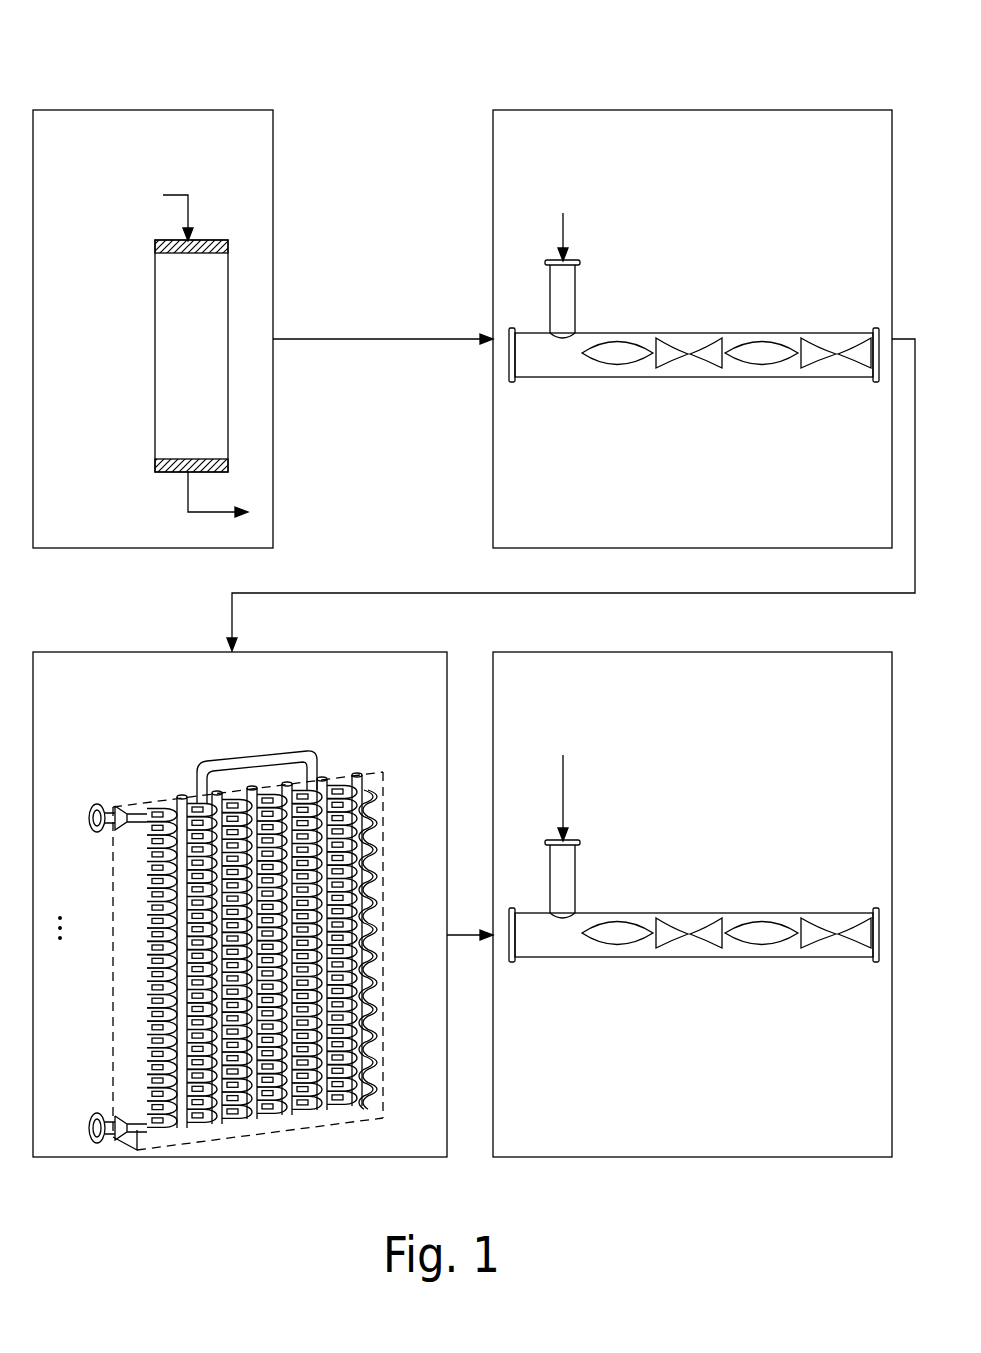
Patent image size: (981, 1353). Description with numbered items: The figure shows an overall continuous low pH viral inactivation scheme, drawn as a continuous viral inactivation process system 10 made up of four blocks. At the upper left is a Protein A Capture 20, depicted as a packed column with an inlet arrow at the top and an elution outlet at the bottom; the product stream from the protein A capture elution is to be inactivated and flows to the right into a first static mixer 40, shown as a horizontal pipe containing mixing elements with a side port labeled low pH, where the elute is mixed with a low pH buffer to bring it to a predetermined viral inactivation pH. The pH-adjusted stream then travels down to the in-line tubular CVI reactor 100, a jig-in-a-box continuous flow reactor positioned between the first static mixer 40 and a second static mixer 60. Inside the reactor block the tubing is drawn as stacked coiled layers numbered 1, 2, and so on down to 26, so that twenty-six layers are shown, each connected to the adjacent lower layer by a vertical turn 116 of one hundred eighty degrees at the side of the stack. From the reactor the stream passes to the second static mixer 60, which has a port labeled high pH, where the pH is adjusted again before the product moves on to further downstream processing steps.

The continuous viral inactivation (CVI) process system 10 is at (296, 68).
The Protein A Capture 20 is at (100, 247).
The first static mixer 40 is at (802, 247).
The second static mixer 60 is at (832, 784).
The in-line tubular CVI reactor 100 is at (113, 714).
The 180° vertical turn 116 is at (377, 787).
The first coil turn 1 is at (143, 815).
The second coil turn 2 is at (143, 842).
The last coil turn 26 is at (140, 1122).